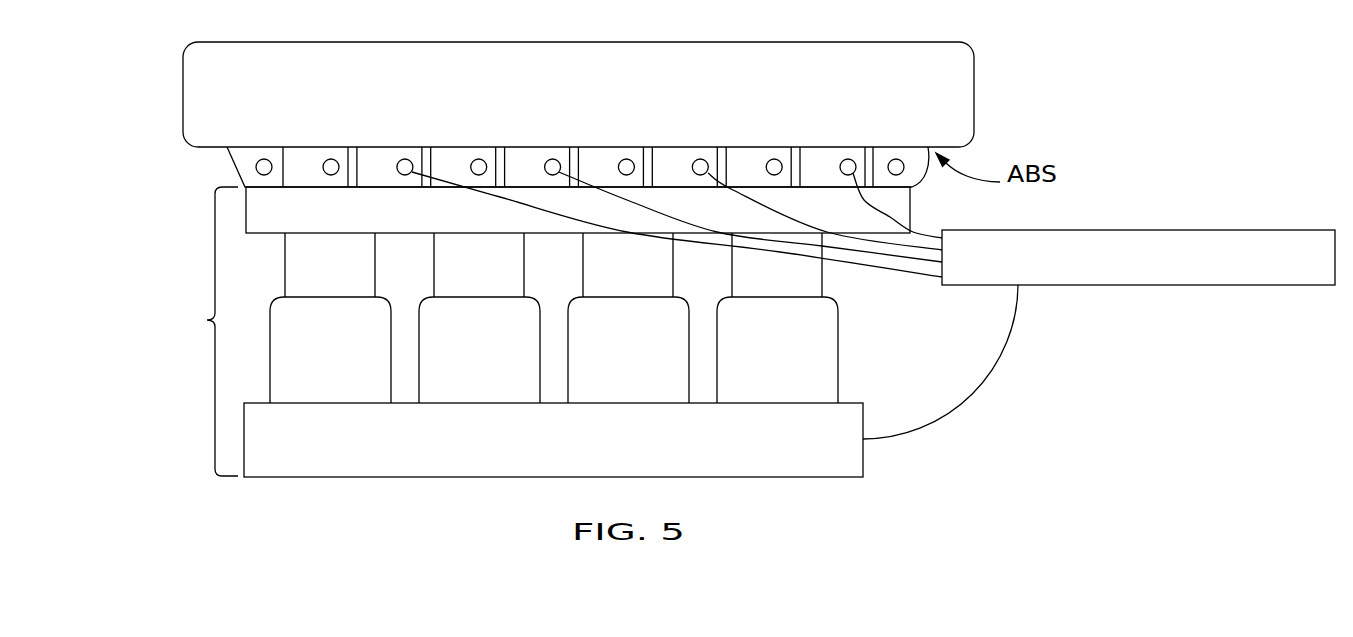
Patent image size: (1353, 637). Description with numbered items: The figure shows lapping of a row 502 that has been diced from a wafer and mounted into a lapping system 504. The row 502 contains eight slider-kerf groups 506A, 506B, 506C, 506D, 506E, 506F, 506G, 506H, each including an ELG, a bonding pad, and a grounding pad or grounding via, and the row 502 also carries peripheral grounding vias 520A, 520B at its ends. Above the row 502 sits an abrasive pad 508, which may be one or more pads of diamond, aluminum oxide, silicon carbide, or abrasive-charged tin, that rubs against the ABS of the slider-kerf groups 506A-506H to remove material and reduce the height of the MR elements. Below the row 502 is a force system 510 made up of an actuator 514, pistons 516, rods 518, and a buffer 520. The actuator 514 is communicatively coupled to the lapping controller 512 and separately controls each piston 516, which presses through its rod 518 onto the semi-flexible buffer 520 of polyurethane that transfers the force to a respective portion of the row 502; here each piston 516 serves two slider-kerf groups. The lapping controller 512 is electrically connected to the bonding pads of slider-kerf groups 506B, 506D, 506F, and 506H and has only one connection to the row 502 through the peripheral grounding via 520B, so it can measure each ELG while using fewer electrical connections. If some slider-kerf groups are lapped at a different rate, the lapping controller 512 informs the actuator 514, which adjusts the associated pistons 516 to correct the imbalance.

The row 502 is at (233, 163).
The lapping system 504 is at (1118, 449).
The slider-kerf group 506A is at (357, 143).
The slider-kerf group 506B is at (431, 143).
The slider-kerf group 506C is at (505, 143).
The slider-kerf group 506D is at (579, 143).
The slider-kerf group 506E is at (652, 143).
The slider-kerf group 506F is at (726, 143).
The slider-kerf group 506G is at (800, 143).
The slider-kerf group 506H is at (874, 143).
The abrasive pad 508 is at (706, 82).
The force system 510 is at (207, 320).
The lapping controller 512 is at (1319, 273).
The actuator 514 is at (707, 453).
The piston 516 is at (350, 342).
The rod 518 is at (350, 286).
The buffer 520 is at (442, 222).
The peripheral grounding via 520A is at (260, 159).
The peripheral grounding via 520B is at (893, 162).